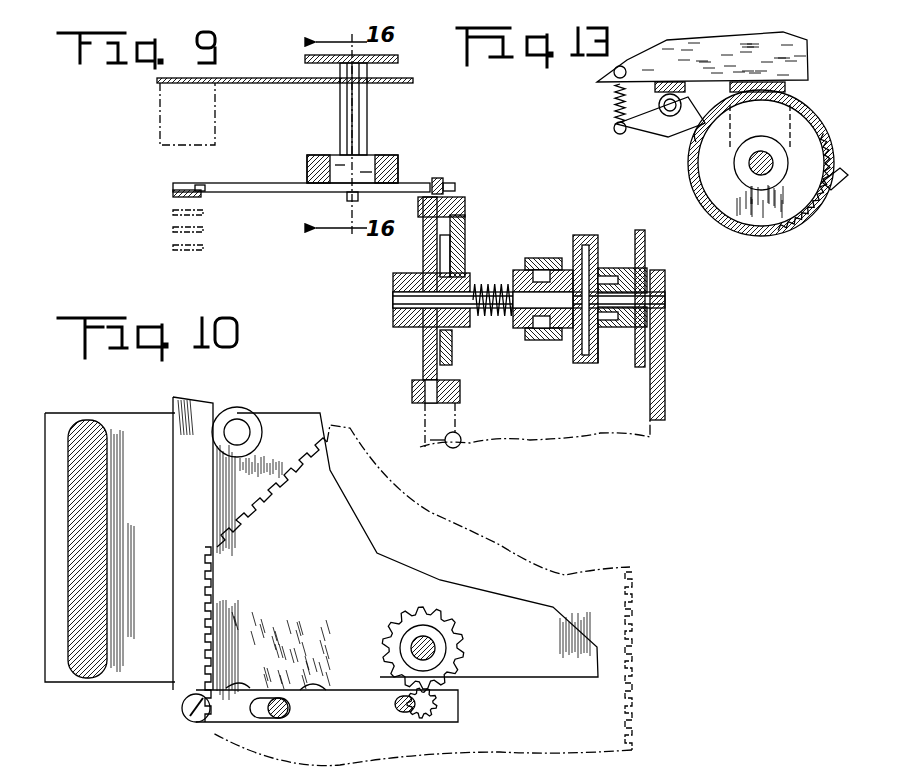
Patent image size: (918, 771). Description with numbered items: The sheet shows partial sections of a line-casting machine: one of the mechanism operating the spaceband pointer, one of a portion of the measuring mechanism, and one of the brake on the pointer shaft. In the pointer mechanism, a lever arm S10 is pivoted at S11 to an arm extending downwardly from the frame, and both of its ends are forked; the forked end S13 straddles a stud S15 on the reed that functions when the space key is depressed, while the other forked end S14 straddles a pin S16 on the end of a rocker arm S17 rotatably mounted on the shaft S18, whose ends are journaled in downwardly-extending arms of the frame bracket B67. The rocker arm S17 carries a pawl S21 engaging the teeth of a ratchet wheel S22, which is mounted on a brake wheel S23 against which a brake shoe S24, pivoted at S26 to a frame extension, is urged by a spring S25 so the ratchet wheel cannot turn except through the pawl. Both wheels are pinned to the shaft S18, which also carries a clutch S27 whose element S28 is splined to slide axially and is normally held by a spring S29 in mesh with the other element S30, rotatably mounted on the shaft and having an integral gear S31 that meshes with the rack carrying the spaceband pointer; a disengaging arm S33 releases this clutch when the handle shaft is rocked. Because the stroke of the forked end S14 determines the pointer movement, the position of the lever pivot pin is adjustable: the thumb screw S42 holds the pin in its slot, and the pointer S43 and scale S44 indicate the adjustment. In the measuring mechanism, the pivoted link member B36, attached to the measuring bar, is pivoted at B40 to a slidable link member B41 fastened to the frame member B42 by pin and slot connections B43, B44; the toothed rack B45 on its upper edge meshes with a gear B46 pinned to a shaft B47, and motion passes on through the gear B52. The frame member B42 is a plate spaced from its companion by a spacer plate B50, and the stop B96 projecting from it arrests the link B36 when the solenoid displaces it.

In FIG. 9, the thumb screw S42 is at (392, 55).
In FIG. 9, the scale S44 is at (341, 80).
In FIG. 9, the pointer S43 is at (368, 72).
In FIG. 9, the lever arm S10 is at (258, 160).
In FIG. 9, the stud S15 is at (203, 188).
In FIG. 9, the forked end S13 is at (190, 190).
In FIG. 9, the pivot S11 is at (350, 198).
In FIG. 9, the pin S16 is at (438, 180).
In FIG. 9, the forked end S14 is at (452, 185).
In FIG. 9, the rocker arm S17 is at (428, 237).
In FIG. 9, the pawl S21 is at (462, 228).
In FIG. 13, the pawl S21 is at (835, 182).
In FIG. 9, the ratchet wheel S22 is at (455, 262).
In FIG. 13, the ratchet wheel S22 is at (790, 125).
In FIG. 9, the brake wheel S23 is at (400, 280).
In FIG. 13, the brake wheel S23 is at (695, 155).
In FIG. 9, the shaft S18 is at (400, 298).
In FIG. 13, the shaft S18 is at (748, 163).
In FIG. 9, the spring S29 is at (486, 316).
In FIG. 9, the disengaging arm S33 is at (540, 258).
In FIG. 9, the clutch element S28 is at (580, 347).
In FIG. 9, the clutch S27 is at (588, 355).
In FIG. 9, the clutch element S30 is at (603, 358).
In FIG. 9, the gear S31 is at (646, 256).
In FIG. 9, the frame bracket B67 is at (663, 333).
In FIG. 9, the brake shoe S24 is at (452, 348).
In FIG. 13, the brake shoe S24 is at (678, 128).
In FIG. 9, the pivot S26 is at (458, 392).
In FIG. 13, the pivot S26 is at (672, 100).
In FIG. 9, the spring S25 is at (462, 440).
In FIG. 13, the spring S25 is at (614, 100).
In FIG. 10, the spacer plate B50 is at (100, 485).
In FIG. 10, the frame member B42 is at (200, 525).
In FIG. 10, the link member B36 is at (200, 555).
In FIG. 10, the stop B96 is at (237, 432).
In FIG. 10, the gear B52 is at (640, 700).
In FIG. 10, the slidable link member B41 is at (360, 690).
In FIG. 10, the pivot B40 is at (184, 706).
In FIG. 10, the pin and slot connection B43 is at (275, 698).
In FIG. 10, the shaft B47 is at (430, 645).
In FIG. 10, the gear B46 is at (455, 660).
In FIG. 10, the toothed rack B45 is at (440, 690).
In FIG. 10, the pin and slot connection B44 is at (398, 706).